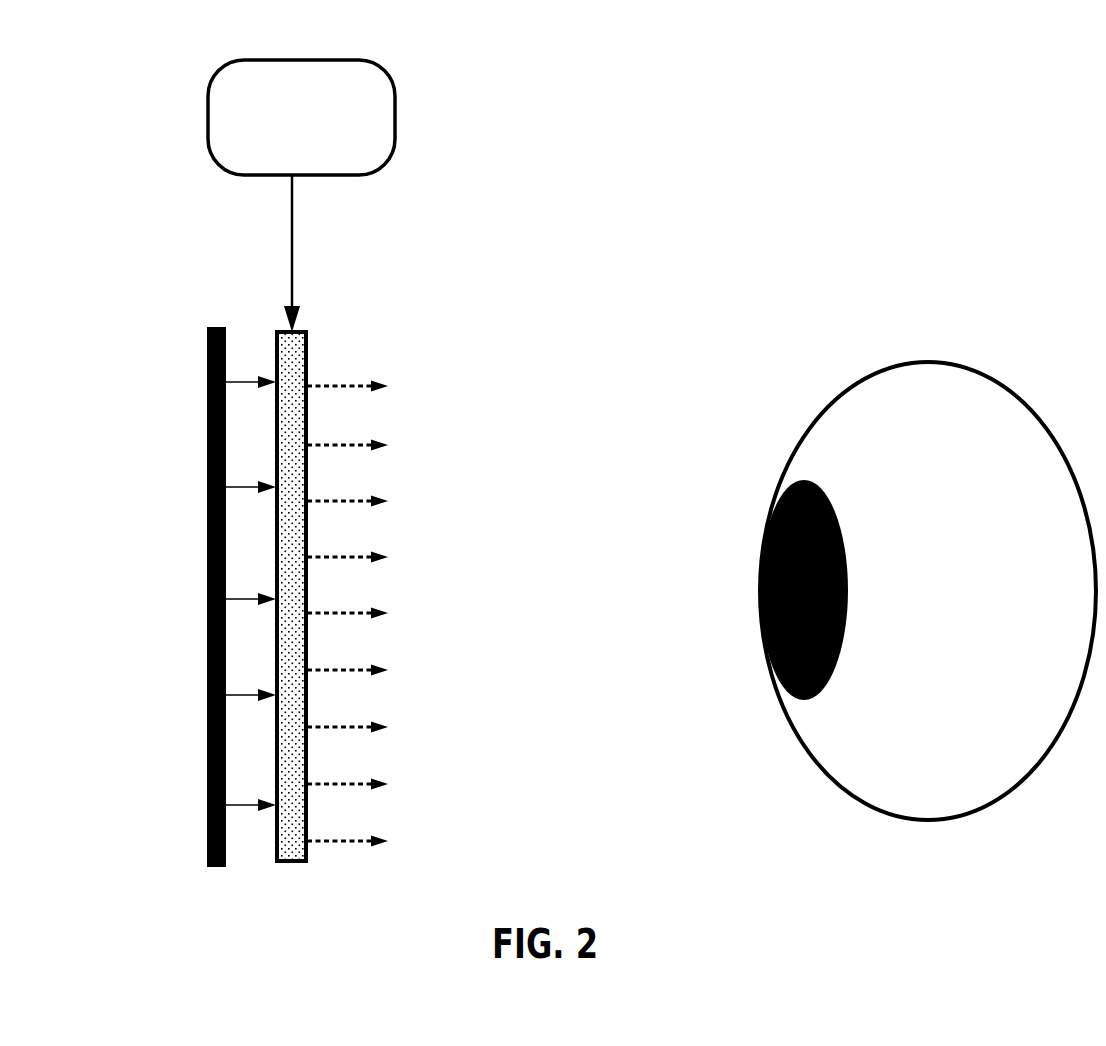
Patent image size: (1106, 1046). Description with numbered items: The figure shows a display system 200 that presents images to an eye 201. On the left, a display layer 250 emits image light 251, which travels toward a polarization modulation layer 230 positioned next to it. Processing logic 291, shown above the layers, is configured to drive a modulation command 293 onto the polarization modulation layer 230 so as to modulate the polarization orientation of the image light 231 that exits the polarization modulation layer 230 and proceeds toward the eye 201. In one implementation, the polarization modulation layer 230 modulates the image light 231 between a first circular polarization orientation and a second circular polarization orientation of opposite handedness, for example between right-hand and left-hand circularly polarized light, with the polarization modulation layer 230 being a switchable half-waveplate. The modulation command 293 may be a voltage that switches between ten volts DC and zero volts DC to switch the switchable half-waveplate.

The display system 200 is at (1073, 67).
The eye 201 is at (1038, 336).
The processing logic 291 is at (355, 134).
The modulation command 293 is at (291, 251).
The display layer 250 is at (213, 867).
The image light 251 is at (251, 580).
The polarization modulation layer 230 is at (293, 862).
The image light 231 is at (366, 613).